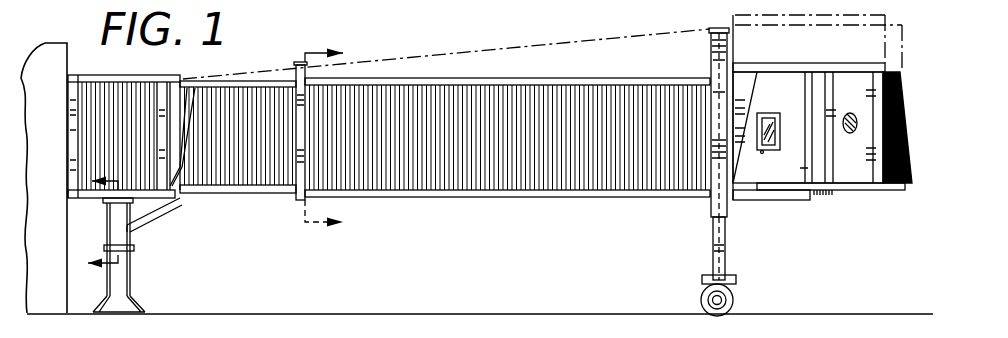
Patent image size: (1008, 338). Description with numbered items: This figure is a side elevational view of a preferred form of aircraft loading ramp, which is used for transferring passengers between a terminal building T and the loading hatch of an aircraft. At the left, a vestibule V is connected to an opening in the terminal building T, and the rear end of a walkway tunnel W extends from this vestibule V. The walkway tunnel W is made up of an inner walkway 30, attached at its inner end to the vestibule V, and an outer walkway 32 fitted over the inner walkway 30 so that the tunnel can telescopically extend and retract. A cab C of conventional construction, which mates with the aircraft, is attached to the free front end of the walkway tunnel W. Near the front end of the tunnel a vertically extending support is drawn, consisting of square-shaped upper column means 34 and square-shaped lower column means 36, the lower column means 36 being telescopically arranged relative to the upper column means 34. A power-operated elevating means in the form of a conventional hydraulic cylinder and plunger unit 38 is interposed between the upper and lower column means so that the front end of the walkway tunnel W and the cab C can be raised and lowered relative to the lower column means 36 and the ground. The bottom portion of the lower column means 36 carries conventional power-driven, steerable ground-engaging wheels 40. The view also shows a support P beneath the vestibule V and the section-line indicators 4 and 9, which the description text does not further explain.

The terminal building T is at (55, 58).
The vestibule V is at (116, 95).
The section line 9- 9 is at (95, 219).
The section line 4- 4 is at (338, 137).
The inner walkway 30 is at (223, 203).
The outer walkway 32 is at (590, 202).
The walkway tunnel W is at (510, 178).
The upper column means 34 is at (710, 55).
The hydraulic cylinder and plunger unit 38 is at (712, 82).
The lower column means 36 is at (732, 250).
The ground-engaging wheels 40 is at (734, 298).
The pedestal support P is at (135, 248).
The cab C is at (828, 162).